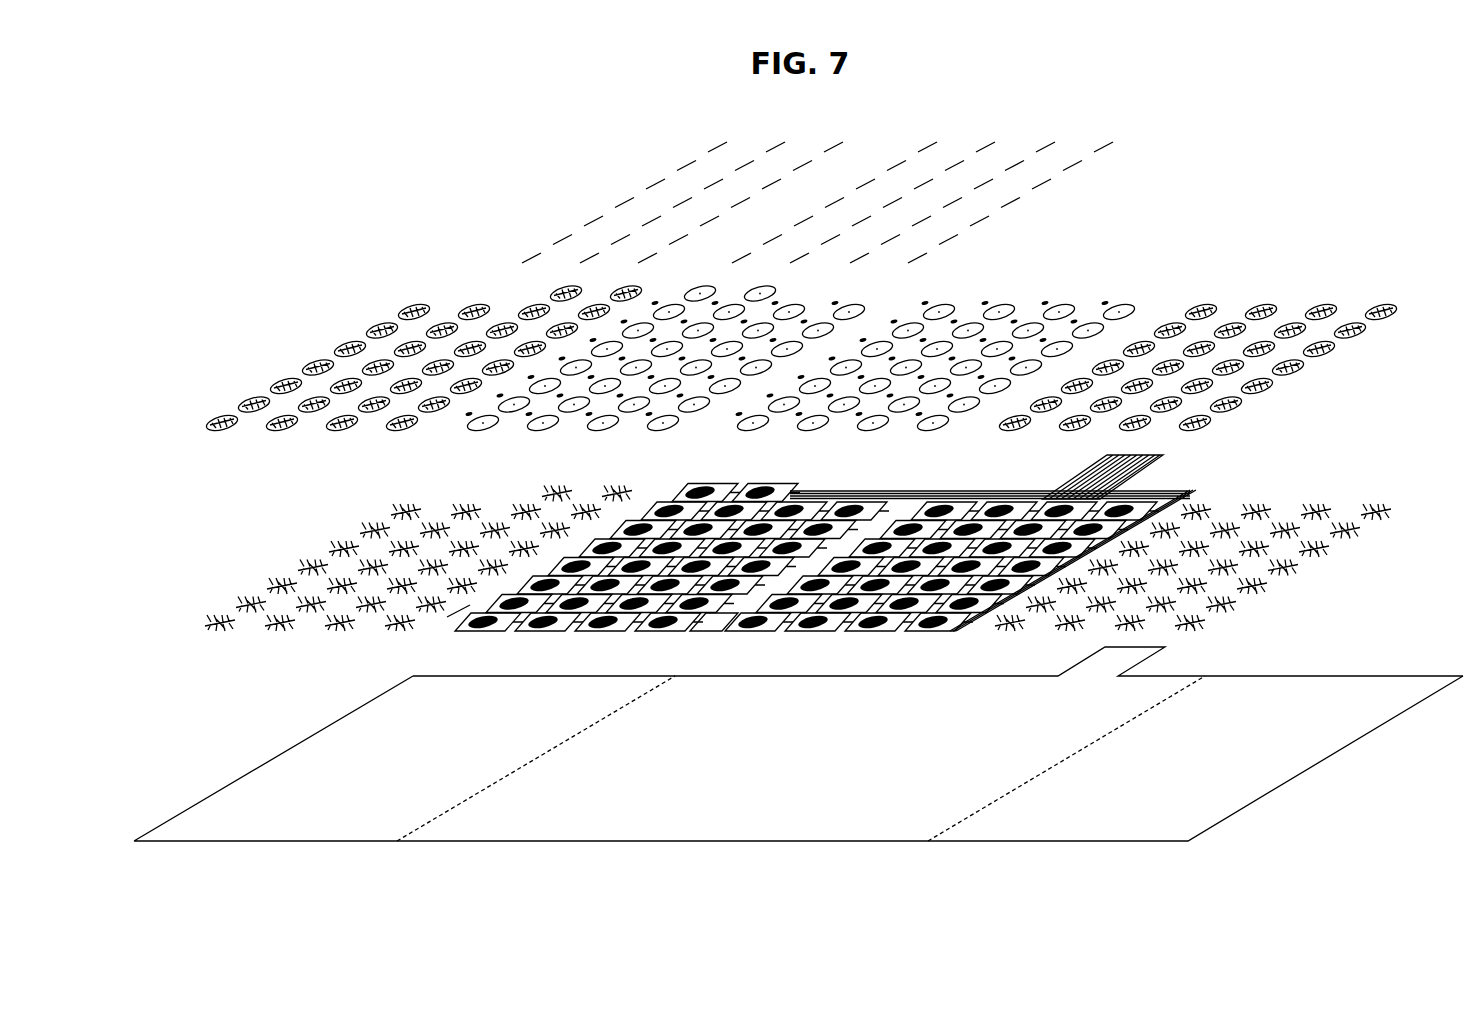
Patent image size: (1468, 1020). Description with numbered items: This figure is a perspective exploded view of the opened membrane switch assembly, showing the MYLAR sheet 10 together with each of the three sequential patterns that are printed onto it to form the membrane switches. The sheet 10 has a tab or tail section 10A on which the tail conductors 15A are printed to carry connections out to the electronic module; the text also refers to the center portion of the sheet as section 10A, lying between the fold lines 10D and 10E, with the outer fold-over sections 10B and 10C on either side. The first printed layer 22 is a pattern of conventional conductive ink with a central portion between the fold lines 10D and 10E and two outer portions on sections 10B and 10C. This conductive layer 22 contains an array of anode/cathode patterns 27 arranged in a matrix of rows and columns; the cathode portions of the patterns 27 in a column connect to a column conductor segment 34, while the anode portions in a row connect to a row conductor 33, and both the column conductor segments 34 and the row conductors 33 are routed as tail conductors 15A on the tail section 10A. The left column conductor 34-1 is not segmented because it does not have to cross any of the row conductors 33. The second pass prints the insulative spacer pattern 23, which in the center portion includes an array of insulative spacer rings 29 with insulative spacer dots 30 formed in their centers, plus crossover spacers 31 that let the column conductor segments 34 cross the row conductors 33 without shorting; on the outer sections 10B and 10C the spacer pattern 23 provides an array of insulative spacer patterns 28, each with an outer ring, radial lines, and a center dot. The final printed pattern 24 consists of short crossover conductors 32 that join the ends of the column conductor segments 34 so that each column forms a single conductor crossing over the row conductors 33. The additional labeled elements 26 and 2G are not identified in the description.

The MYLAR sheet 10 is at (304, 736).
The tab or tail section 10A is at (635, 819).
The outer fold-over section 10B is at (300, 815).
The outer fold-over section 10C is at (1043, 826).
The fold line 10D is at (608, 717).
The fold line 10E is at (1108, 731).
The tail conductors 15A is at (1140, 473).
The first conductive layer 22 is at (184, 508).
The insulative spacer pattern 23 is at (184, 310).
The final printed pattern 24 is at (487, 150).
The bumps 26 is at (370, 527).
The anode/cathode patterns 27 is at (903, 522).
The insulative spacer patterns 28 is at (333, 430).
The insulative spacer rings 29 is at (540, 430).
The insulative spacer dots 30 is at (657, 433).
The crossover spacers 31 is at (900, 318).
The crossover conductors 32 is at (594, 220).
The row conductors 33 is at (722, 613).
The column conductor segments 34 is at (818, 512).
The left column conductor 34-1 is at (463, 610).
The bump 2G is at (1270, 581).